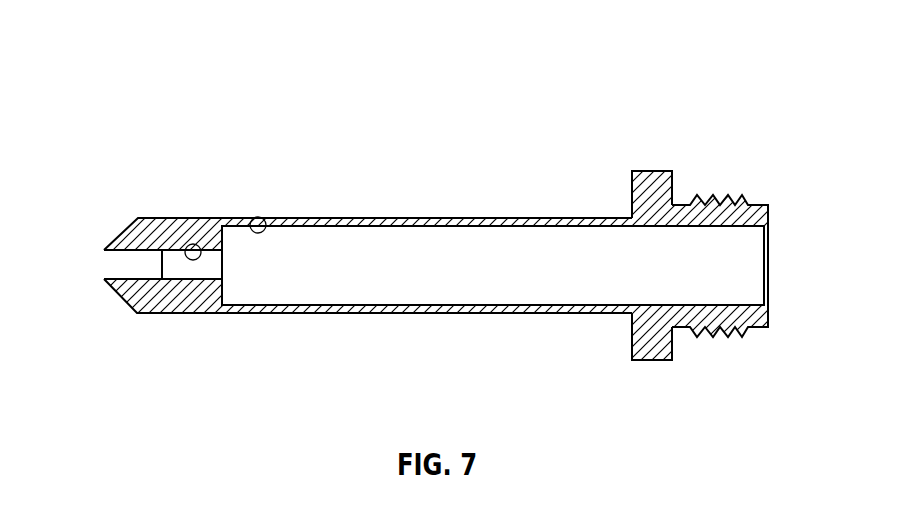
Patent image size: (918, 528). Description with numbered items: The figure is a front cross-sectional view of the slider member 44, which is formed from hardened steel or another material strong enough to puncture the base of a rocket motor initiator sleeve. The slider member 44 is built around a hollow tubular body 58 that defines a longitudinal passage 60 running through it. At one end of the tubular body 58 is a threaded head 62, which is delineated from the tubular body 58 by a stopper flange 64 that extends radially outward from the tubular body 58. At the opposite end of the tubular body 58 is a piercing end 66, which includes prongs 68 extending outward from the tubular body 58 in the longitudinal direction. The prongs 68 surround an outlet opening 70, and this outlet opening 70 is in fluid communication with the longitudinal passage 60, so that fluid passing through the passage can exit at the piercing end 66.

The slider member 44 is at (417, 192).
The hollow tubular body 58 is at (417, 217).
The longitudinal passage 60 is at (265, 222).
The threaded head 62 is at (742, 200).
The stopper flange 64 is at (645, 170).
The piercing end 66 is at (145, 215).
The prongs 68 is at (128, 232).
The outlet opening 70 is at (203, 248).